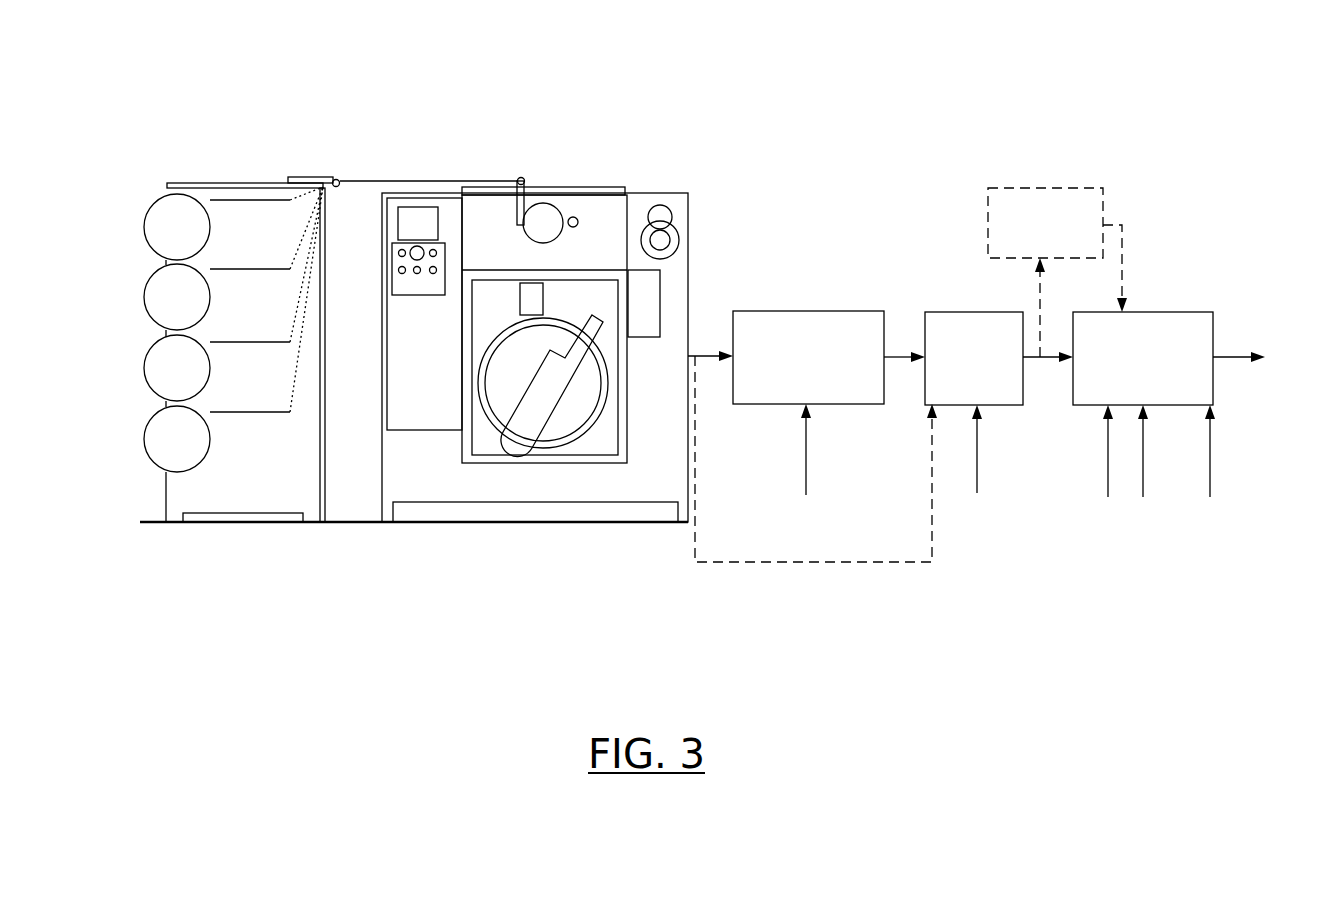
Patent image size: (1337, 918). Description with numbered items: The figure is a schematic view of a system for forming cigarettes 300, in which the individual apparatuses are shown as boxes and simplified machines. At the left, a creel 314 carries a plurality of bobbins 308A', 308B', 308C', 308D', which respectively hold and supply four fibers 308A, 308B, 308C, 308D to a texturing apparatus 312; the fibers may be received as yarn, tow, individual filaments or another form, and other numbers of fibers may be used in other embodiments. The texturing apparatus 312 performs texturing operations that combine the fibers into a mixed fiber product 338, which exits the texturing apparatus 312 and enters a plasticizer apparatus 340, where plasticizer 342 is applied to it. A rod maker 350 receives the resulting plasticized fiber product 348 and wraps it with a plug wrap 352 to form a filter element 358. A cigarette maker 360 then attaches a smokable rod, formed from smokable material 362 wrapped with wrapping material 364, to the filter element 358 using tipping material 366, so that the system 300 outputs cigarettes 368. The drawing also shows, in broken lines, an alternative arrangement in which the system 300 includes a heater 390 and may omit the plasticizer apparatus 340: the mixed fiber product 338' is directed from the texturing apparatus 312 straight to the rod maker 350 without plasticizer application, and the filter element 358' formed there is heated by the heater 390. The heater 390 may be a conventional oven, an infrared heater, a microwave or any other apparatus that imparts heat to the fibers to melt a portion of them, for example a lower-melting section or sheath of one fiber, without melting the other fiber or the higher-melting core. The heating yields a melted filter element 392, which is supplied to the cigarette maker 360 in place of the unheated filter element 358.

The system for forming cigarettes 300 is at (414, 283).
The bobbin 308A' is at (139, 213).
The bobbin 308B' is at (139, 284).
The bobbin 308C' is at (139, 356).
The bobbin 308D' is at (139, 427).
The fiber 308A is at (263, 213).
The fiber 308B is at (263, 283).
The fiber 308C is at (263, 356).
The fiber 308D is at (264, 426).
The texturing apparatus 312 is at (535, 337).
The creel 314 is at (341, 336).
The mixed fiber product 338 is at (740, 312).
The mixed fiber product 338' is at (816, 483).
The plasticizer apparatus 340 is at (814, 340).
The plasticizer 342 is at (847, 449).
The plasticized fiber product 348 is at (926, 293).
The rod maker 350 is at (965, 342).
The plug wrap 352 is at (1018, 449).
The filter element 358 is at (1034, 391).
The filter element 358' is at (1078, 307).
The cigarette maker 360 is at (1150, 342).
The smokable material 362 is at (1069, 472).
The wrapping material 364 is at (1186, 471).
The tipping material 366 is at (1251, 451).
The cigarettes 368 is at (1269, 307).
The heater 390 is at (1057, 199).
The melted filter element 392 is at (1156, 268).